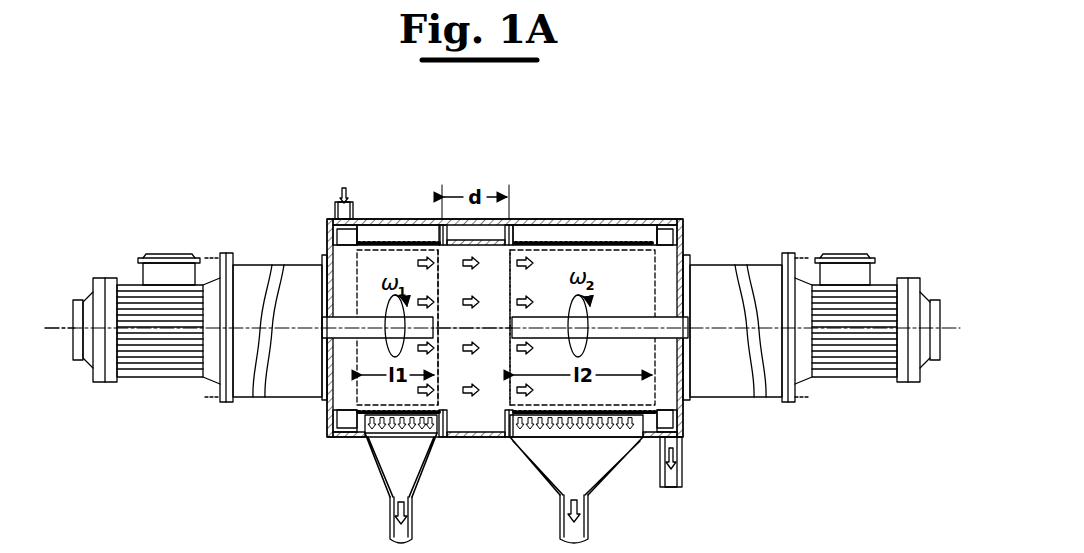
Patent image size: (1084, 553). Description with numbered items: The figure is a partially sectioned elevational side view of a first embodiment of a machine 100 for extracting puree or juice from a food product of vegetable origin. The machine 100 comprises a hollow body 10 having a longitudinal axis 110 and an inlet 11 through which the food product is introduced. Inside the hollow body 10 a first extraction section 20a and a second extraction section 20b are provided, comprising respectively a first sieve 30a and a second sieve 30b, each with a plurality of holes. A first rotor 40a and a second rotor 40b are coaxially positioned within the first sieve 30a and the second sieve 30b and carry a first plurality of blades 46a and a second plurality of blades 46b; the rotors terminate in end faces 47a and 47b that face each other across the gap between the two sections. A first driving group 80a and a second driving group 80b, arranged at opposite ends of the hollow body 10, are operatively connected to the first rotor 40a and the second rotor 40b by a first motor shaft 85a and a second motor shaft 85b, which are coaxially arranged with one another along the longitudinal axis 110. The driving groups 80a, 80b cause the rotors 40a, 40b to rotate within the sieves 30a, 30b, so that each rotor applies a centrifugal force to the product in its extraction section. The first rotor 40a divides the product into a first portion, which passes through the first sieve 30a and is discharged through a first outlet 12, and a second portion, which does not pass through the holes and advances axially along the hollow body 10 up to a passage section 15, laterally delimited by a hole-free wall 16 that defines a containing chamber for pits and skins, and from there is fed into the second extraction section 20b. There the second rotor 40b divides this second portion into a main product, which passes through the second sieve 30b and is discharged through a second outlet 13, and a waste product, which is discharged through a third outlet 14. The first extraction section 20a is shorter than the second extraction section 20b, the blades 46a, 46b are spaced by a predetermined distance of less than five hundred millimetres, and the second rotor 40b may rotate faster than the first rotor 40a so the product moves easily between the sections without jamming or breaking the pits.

The machine 100 is at (226, 119).
The hollow body 10 is at (621, 221).
The inlet 11 is at (330, 200).
The first outlet 12 is at (389, 449).
The second outlet 13 is at (586, 452).
The third outlet 14 is at (684, 448).
The passage section 15 is at (493, 386).
The wall 16 is at (489, 400).
The first extraction section 20a is at (383, 236).
The second extraction section 20b is at (633, 237).
The first sieve 30a is at (400, 237).
The second sieve 30b is at (596, 237).
The first rotor 40a is at (343, 362).
The second rotor 40b is at (653, 395).
The first plurality of blades 46a is at (363, 392).
The second plurality of blades 46b is at (585, 262).
The first rotor end face 47a is at (440, 382).
The second rotor end face 47b is at (512, 288).
The first driving group 80a is at (133, 248).
The second driving group 80b is at (867, 388).
The first motor shaft 85a is at (355, 321).
The second motor shaft 85b is at (637, 305).
The longitudinal axis 110 is at (62, 322).